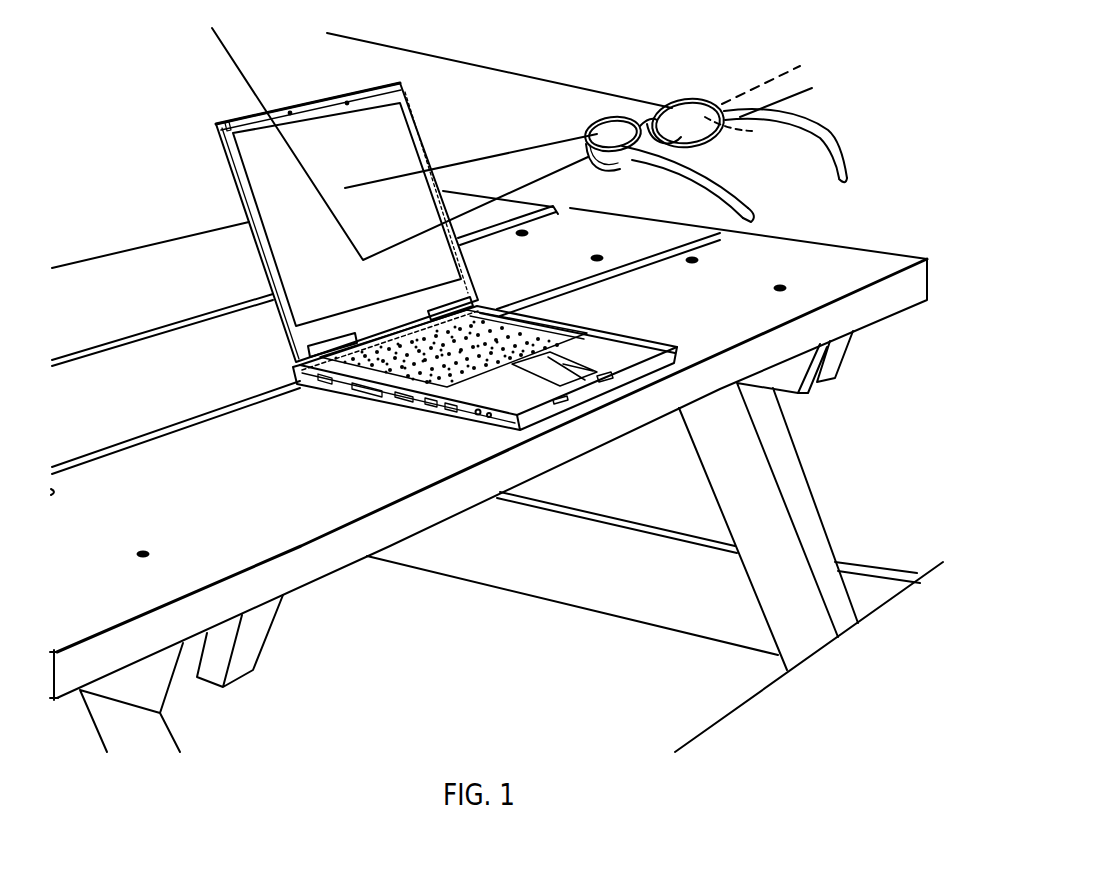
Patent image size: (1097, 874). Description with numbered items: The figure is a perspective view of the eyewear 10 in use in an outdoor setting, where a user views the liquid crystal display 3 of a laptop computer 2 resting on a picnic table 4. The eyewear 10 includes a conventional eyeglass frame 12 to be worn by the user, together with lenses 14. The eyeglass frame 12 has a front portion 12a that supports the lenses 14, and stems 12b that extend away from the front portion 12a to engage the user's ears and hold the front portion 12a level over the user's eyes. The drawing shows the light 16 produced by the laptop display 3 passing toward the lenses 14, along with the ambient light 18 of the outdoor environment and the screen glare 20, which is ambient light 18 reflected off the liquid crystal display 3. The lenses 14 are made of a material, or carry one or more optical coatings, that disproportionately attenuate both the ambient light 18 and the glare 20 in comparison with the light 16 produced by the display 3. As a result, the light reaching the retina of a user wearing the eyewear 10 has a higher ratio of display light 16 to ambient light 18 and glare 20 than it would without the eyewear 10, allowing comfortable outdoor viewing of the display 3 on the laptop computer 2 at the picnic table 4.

The laptop computer 2 is at (428, 242).
The liquid crystal display 3 is at (257, 160).
The picnic table 4 is at (147, 272).
The eyewear 10 is at (747, 205).
The eyeglass frame 12 is at (677, 172).
The front portion 12a is at (677, 100).
The stems 12b is at (705, 173).
The lenses 14 is at (610, 122).
The light 16 is at (455, 160).
The ambient light 18 is at (500, 68).
The screen glare 20 is at (237, 62).